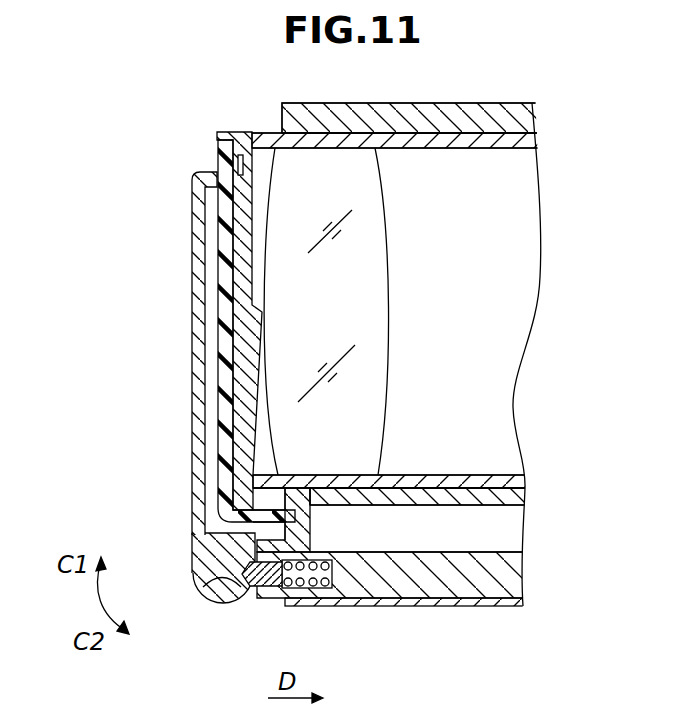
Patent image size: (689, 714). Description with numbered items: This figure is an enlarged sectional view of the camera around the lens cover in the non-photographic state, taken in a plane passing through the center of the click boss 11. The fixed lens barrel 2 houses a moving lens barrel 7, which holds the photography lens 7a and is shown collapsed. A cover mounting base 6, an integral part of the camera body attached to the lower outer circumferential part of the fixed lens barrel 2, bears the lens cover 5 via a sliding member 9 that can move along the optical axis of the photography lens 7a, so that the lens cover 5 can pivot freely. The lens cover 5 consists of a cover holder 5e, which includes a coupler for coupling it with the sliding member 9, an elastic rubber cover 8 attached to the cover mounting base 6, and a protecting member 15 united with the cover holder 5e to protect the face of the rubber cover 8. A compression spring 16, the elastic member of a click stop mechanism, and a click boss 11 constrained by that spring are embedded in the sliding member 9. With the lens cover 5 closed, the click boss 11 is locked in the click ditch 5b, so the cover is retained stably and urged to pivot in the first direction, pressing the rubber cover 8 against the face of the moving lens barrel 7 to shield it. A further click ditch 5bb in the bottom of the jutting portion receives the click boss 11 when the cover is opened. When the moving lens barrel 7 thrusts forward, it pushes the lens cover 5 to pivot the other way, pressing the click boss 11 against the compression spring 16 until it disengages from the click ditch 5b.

The fixed lens barrel 2 is at (350, 103).
The lens cover 5 is at (186, 229).
The click ditch 5b is at (202, 590).
The click ditch 5bb is at (225, 607).
The cover holder 5e is at (205, 562).
The cover mounting base 6 is at (405, 538).
The moving lens barrel 7 is at (262, 133).
The photography lens 7a is at (227, 142).
The rubber cover 8 is at (310, 175).
The sliding member 9 is at (443, 577).
The click boss 11 is at (260, 592).
The protecting member 15 is at (192, 285).
The compression spring 16 is at (300, 590).